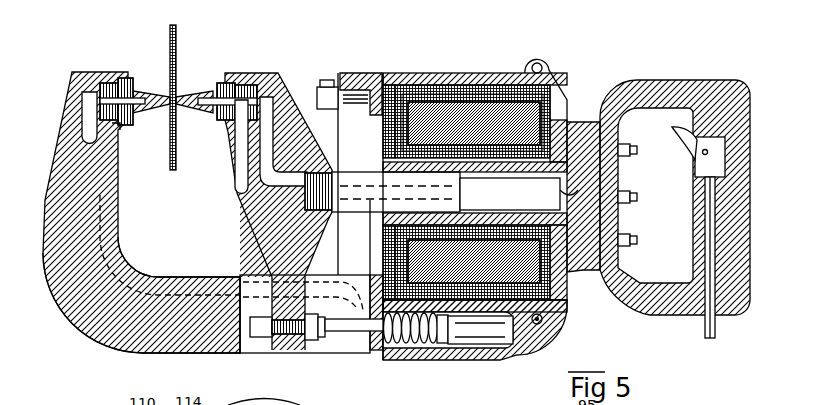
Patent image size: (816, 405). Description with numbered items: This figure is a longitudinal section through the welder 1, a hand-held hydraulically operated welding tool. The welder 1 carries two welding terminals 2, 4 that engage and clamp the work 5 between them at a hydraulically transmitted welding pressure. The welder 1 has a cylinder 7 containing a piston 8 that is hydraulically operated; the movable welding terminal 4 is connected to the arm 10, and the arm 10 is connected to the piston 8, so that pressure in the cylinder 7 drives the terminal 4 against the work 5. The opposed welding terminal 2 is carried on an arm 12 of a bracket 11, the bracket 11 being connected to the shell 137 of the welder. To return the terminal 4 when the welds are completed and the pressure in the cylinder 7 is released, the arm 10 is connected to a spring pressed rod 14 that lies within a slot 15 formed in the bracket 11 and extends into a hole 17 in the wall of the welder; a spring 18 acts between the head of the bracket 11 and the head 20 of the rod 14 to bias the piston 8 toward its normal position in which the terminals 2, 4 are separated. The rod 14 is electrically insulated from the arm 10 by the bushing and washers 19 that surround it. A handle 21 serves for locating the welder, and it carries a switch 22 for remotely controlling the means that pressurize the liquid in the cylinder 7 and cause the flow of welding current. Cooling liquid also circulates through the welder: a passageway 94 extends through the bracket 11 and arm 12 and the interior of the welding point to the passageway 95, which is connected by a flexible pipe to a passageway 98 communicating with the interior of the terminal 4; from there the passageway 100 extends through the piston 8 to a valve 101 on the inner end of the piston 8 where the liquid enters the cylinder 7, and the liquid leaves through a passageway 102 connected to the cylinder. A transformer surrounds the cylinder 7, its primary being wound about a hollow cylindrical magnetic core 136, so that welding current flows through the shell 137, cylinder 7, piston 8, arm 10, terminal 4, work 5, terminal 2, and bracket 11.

The welder 1 is at (557, 87).
The welding terminal 2 is at (156, 94).
The welding terminal 4 is at (195, 88).
The work 5 is at (177, 58).
The cylinder 7 is at (564, 118).
The piston 8 is at (457, 93).
The arm 10 is at (275, 107).
The bracket 11 is at (167, 317).
The arm 12 is at (87, 190).
The spring pressed rod 14 is at (357, 338).
The slot 15 is at (322, 350).
The hole 17 is at (493, 344).
The spring 18 is at (415, 344).
The bushing and washers 19 is at (282, 350).
The head 20 is at (442, 347).
The handle 21 is at (725, 222).
The switch 22 is at (682, 147).
The passageway 94 is at (112, 127).
The passageway 95 is at (87, 123).
The passageway 98 is at (247, 161).
The passageway 100 is at (263, 152).
The valve 101 is at (482, 115).
The passageway 102 is at (589, 122).
The magnetic core 136 is at (503, 105).
The shell 137 is at (418, 73).